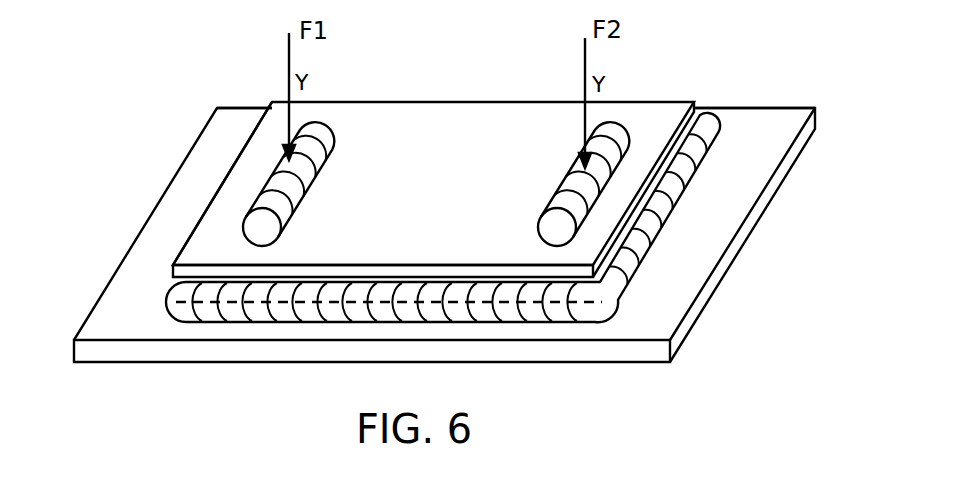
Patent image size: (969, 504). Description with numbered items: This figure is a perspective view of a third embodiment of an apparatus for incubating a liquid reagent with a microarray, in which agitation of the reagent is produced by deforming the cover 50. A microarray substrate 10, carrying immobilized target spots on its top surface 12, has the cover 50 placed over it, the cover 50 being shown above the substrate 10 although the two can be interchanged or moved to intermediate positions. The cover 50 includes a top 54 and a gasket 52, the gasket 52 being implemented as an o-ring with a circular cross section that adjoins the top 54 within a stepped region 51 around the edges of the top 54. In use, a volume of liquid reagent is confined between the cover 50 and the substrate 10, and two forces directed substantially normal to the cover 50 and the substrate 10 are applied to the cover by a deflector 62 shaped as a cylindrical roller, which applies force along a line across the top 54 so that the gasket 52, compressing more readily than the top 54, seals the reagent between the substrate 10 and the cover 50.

The microarray substrate 10 is at (708, 292).
The top surface 12 is at (783, 116).
The cover 50 is at (505, 117).
The stepped region 51 is at (170, 287).
The gasket 52 is at (199, 304).
The top 54 is at (233, 218).
The deflector 62 is at (287, 192).